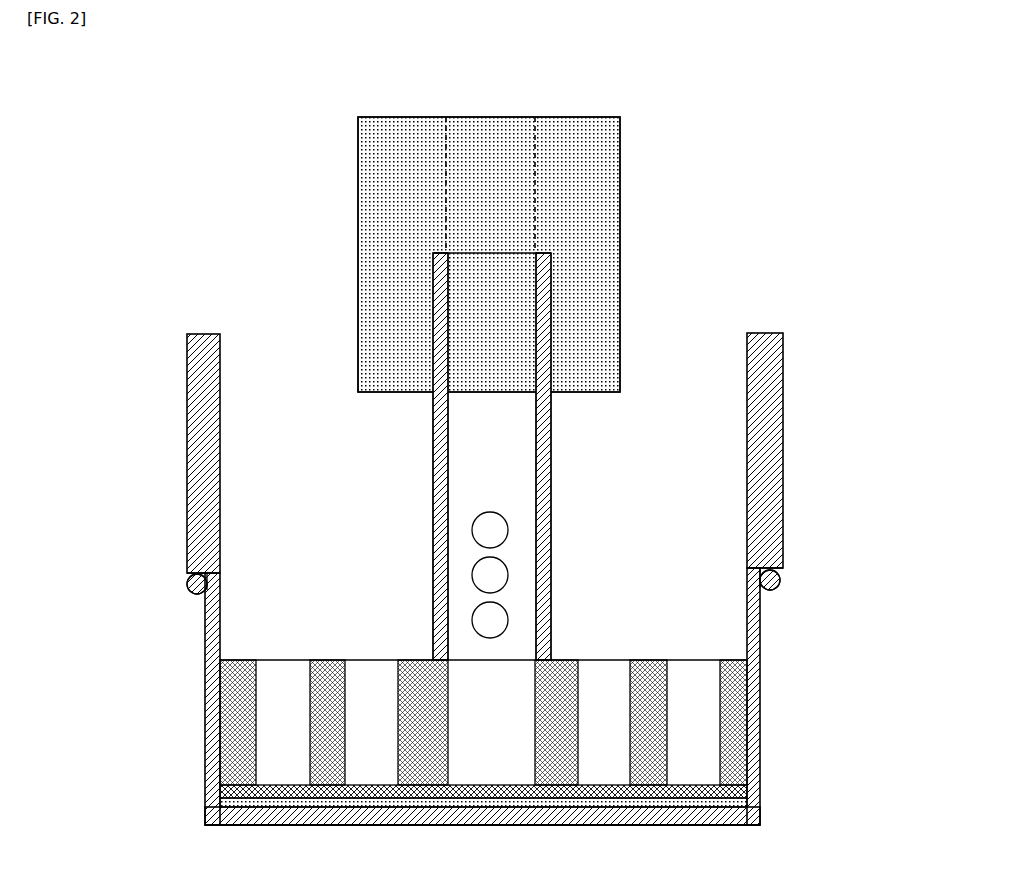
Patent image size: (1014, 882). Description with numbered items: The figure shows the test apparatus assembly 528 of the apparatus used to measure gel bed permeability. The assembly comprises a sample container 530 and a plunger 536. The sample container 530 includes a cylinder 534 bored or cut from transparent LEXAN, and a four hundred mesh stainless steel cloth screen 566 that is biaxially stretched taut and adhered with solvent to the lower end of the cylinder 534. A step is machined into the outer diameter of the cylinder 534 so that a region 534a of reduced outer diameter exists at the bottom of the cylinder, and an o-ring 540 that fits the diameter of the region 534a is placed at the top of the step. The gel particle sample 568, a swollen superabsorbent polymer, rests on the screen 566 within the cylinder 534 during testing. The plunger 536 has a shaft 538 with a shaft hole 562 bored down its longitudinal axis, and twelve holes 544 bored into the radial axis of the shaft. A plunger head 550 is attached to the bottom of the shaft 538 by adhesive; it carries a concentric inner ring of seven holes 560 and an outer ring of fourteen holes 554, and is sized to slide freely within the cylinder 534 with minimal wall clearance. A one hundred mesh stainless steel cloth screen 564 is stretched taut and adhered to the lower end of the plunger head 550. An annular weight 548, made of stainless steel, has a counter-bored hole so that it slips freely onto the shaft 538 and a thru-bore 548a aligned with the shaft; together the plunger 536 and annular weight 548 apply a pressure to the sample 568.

The test apparatus assembly 528 is at (789, 179).
The sample container 530 is at (813, 482).
The cylinder 534 is at (186, 365).
The region 534a is at (777, 639).
The plunger 536 is at (578, 529).
The shaft 538 is at (432, 455).
The o-ring 540 is at (184, 585).
The holes 544 is at (499, 513).
The annular weight 548 is at (598, 117).
The thru-bore 548a is at (533, 150).
The plunger head 550 is at (740, 716).
The outer ring of holes 554 is at (266, 727).
The inner ring of holes 560 is at (356, 768).
The shaft hole 562 is at (482, 765).
The stainless steel cloth screen 564 is at (733, 790).
The stainless steel cloth screen 566 is at (590, 810).
The gel particle sample 568 is at (760, 808).